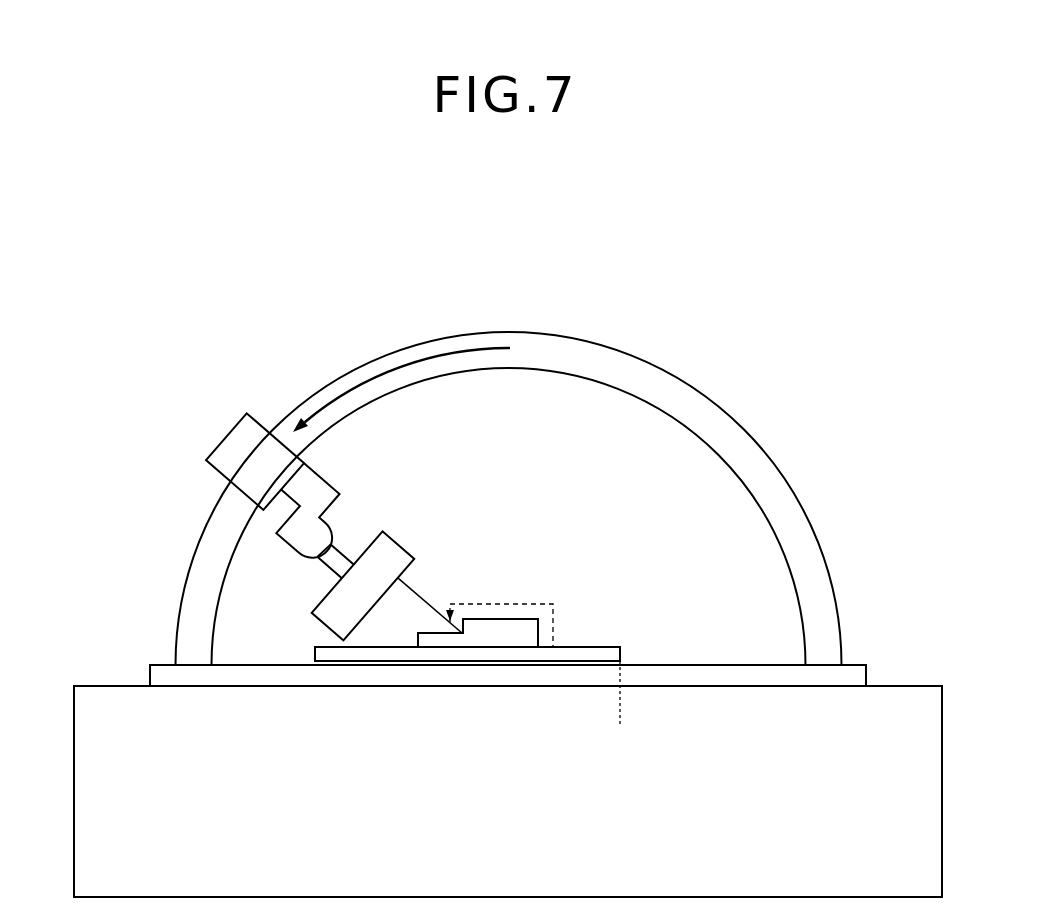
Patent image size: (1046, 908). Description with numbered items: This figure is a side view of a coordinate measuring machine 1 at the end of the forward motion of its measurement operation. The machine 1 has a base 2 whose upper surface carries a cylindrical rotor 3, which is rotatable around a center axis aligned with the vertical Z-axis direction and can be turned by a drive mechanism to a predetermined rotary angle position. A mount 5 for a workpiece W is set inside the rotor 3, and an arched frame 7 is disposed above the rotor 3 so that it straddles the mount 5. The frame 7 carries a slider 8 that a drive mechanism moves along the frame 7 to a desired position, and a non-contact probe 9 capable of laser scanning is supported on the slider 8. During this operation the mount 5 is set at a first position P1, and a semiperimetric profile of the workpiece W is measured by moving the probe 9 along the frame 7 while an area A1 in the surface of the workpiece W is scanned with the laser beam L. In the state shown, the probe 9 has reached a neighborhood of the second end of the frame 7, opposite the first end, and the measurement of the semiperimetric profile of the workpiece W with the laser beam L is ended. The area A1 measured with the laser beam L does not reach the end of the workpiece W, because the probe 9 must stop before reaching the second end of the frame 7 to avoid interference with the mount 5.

The coordinate measuring machine 1 is at (244, 198).
The base 2 is at (99, 686).
The rotor 3 is at (150, 675).
The mount 5 is at (620, 652).
The frame 7 is at (203, 530).
The slider 8 is at (227, 453).
The probe 9 is at (390, 543).
The laser beam L is at (413, 591).
The area A1 is at (517, 604).
The workpiece W is at (527, 632).
The first position P1 is at (618, 712).